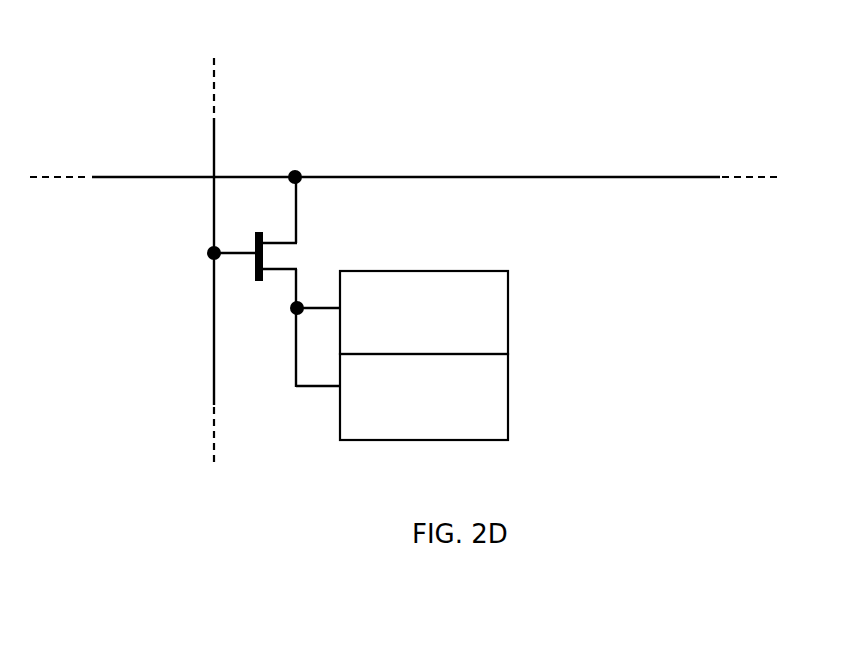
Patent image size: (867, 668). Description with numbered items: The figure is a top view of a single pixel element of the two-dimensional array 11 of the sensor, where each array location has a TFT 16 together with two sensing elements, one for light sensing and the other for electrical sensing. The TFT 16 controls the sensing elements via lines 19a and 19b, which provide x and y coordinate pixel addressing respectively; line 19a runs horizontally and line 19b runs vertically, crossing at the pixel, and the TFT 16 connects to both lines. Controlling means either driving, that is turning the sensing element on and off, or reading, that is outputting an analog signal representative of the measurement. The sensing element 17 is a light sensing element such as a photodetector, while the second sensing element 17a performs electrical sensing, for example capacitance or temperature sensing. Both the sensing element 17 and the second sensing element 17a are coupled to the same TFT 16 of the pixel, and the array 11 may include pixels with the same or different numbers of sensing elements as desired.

The array 11 is at (365, 110).
The line 19a is at (487, 177).
The line 19b is at (214, 220).
The TFT 16 is at (256, 282).
The second sensing element 17a is at (437, 321).
The sensing element 17 is at (424, 403).